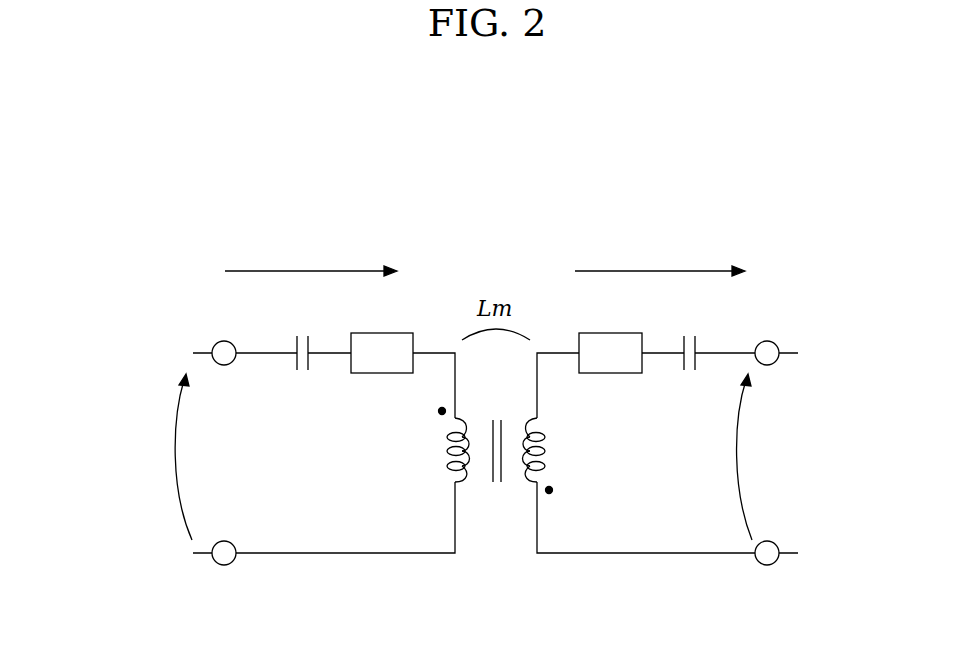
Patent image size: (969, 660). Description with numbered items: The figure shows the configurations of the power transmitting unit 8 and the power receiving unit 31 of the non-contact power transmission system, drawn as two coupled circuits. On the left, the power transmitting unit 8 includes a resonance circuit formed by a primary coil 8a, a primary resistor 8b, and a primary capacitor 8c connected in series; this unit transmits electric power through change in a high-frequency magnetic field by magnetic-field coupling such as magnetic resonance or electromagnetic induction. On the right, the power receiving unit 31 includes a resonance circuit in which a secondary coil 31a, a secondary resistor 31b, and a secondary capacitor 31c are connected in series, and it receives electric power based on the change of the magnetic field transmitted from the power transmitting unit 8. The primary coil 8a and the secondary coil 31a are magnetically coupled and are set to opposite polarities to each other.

The power transmitting unit 8 is at (169, 253).
The primary coil 8a is at (458, 483).
The primary resistor 8b is at (411, 333).
The primary capacitor 8c is at (290, 340).
The power receiving unit 31 is at (763, 247).
The secondary coil 31a is at (528, 483).
The secondary resistor 31b is at (580, 333).
The secondary capacitor 31c is at (700, 346).